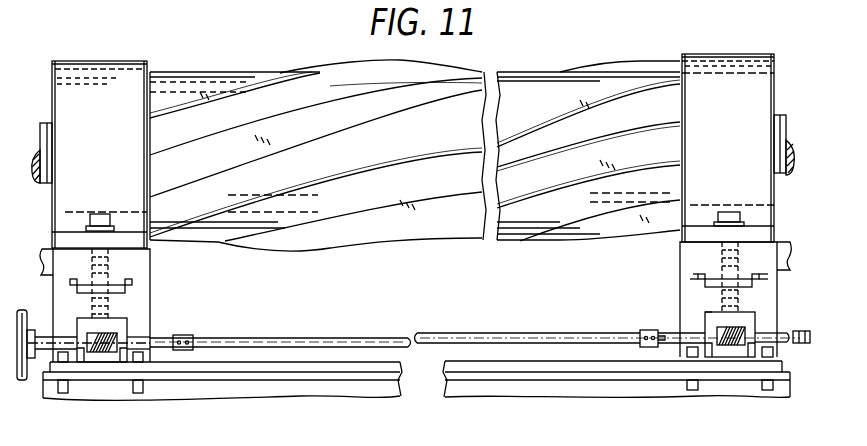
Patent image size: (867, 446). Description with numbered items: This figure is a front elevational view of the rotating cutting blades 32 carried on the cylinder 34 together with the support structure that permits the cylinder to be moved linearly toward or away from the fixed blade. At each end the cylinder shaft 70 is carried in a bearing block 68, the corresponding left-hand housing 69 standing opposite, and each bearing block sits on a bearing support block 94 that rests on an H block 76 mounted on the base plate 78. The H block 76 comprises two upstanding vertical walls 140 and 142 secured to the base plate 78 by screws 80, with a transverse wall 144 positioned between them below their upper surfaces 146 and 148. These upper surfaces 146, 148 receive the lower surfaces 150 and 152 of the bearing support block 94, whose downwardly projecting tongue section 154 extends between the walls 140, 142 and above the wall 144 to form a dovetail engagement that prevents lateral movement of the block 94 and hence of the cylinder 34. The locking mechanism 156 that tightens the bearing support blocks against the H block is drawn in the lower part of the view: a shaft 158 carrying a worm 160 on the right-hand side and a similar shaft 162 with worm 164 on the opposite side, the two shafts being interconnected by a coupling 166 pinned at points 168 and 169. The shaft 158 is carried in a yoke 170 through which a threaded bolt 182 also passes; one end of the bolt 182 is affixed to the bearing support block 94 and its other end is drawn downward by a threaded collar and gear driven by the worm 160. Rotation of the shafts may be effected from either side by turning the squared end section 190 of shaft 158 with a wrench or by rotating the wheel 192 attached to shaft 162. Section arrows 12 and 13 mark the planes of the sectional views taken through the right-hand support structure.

The movable cutting blades 32 is at (312, 78).
The cylinder 34 is at (527, 78).
The bearing block 68 is at (752, 92).
The left bearing housing 69 is at (118, 80).
The cylinder shaft 70 is at (39, 136).
The H block 76 is at (153, 292).
The base plate 78 is at (590, 378).
The screws 80 is at (717, 322).
The bearing support block 94 is at (678, 250).
The upstanding vertical wall 140 is at (698, 330).
The upstanding vertical wall 142 is at (767, 327).
The transverse wall 144 is at (712, 306).
The upper surface 146 is at (693, 275).
The upper surface 148 is at (775, 273).
The lower surface 150 is at (697, 272).
The lower surface 152 is at (770, 268).
The tongue section 154 is at (77, 282).
The locking mechanism 156 is at (98, 358).
The shaft 158 is at (665, 343).
The worm 160 is at (733, 345).
The shaft 162 is at (160, 343).
The worm 164 is at (107, 352).
The coupling 166 is at (376, 320).
The pin point 168 is at (185, 336).
The pin point 169 is at (638, 333).
The yoke 170 is at (688, 376).
The threaded bolt 182 is at (705, 218).
The squared end section 190 is at (803, 353).
The wheel 192 is at (26, 380).
The section line 12- 12 is at (675, 288).
The section line 13- 13 is at (730, 173).